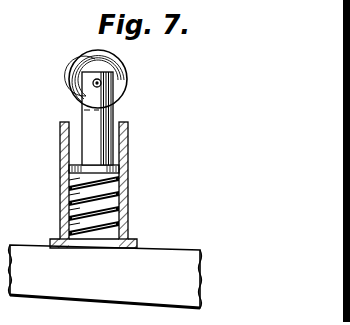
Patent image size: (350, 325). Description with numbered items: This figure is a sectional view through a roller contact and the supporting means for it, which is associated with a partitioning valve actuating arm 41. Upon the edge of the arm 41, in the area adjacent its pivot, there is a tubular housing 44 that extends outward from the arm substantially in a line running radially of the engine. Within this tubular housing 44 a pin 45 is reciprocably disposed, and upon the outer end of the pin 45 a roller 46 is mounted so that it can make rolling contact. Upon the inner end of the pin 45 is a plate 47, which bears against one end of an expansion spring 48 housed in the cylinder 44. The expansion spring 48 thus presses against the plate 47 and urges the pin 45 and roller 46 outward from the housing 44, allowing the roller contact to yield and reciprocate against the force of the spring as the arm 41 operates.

The arm 41 is at (172, 248).
The tubular housing 44 is at (128, 177).
The pin 45 is at (120, 117).
The roller 46 is at (126, 93).
The plate 47 is at (133, 152).
The expansion spring 48 is at (127, 193).